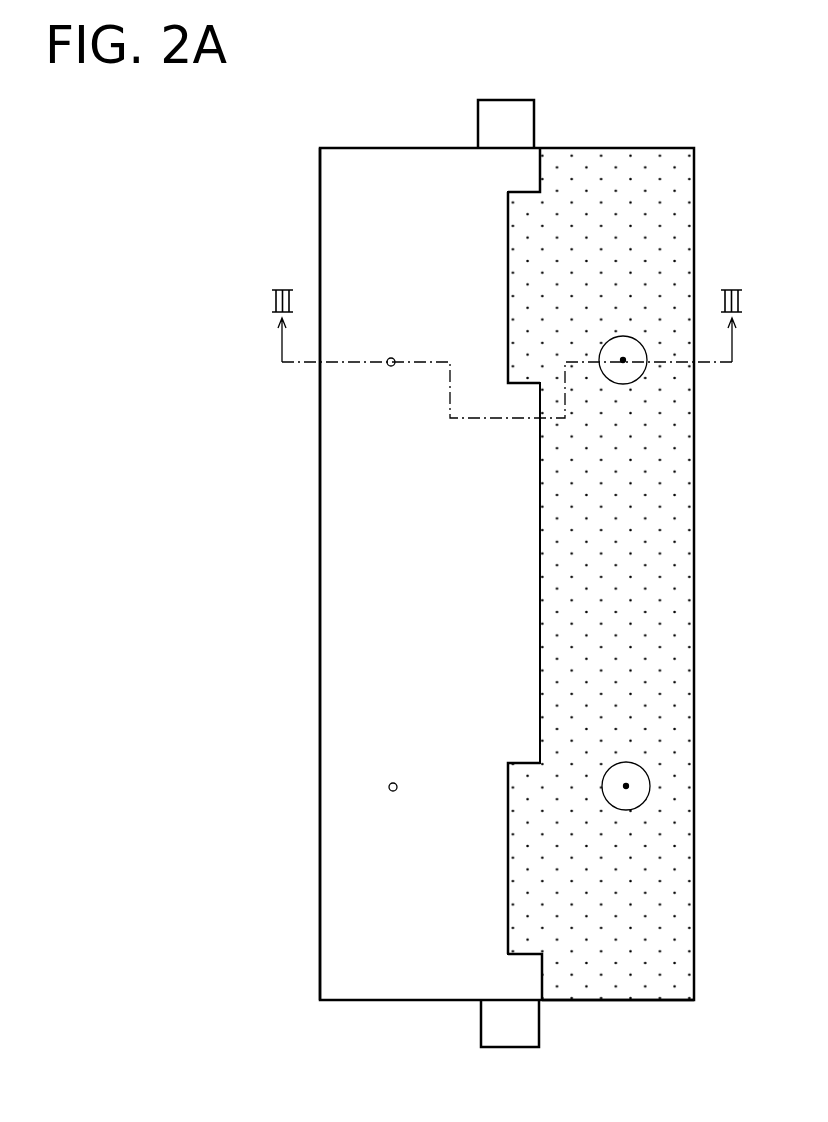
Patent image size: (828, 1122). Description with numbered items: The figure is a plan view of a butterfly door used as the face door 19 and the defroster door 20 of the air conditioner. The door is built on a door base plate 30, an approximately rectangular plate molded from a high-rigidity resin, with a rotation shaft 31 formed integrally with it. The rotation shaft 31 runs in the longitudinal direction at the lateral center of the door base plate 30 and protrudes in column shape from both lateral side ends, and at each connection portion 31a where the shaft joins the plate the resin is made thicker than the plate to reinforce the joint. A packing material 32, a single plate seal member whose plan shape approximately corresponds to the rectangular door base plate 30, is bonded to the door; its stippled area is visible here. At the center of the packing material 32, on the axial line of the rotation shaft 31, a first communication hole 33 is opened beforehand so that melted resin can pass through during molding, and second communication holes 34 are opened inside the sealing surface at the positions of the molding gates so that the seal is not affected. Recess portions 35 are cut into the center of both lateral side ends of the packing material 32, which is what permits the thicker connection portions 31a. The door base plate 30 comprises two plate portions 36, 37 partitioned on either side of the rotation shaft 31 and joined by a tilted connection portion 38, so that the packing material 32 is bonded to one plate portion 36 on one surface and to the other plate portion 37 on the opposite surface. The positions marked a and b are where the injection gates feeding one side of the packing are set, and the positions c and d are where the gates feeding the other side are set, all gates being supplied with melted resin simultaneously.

The face door 19 is at (644, 138).
The defroster door 20 is at (507, 574).
The door base plate 30 is at (316, 184).
The rotation shaft 31 is at (503, 117).
The connection portion 31a is at (520, 167).
The packing material 32 is at (640, 512).
The first communication hole 33 is at (542, 617).
The second communication hole 34 is at (637, 381).
The recess portion 35 is at (540, 175).
The plate portion 36 is at (388, 663).
The plate portion 37 is at (622, 1002).
The connection portion 38 is at (517, 510).
The injection gate position a is at (389, 358).
The injection gate position b is at (388, 787).
The injection gate position c is at (623, 360).
The injection gate position d is at (626, 786).